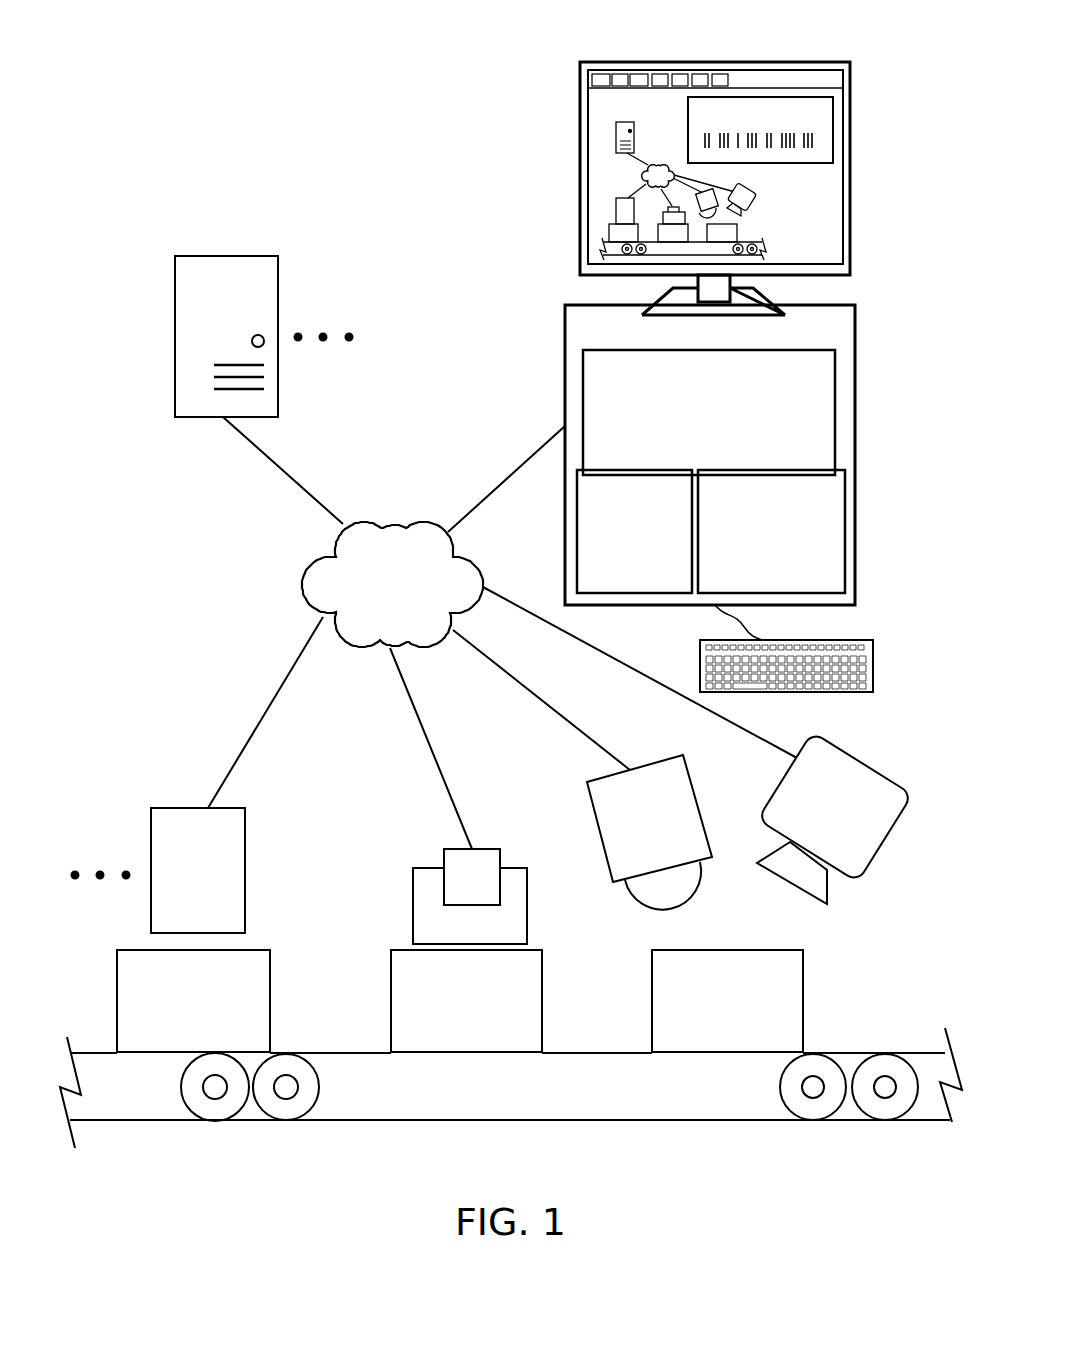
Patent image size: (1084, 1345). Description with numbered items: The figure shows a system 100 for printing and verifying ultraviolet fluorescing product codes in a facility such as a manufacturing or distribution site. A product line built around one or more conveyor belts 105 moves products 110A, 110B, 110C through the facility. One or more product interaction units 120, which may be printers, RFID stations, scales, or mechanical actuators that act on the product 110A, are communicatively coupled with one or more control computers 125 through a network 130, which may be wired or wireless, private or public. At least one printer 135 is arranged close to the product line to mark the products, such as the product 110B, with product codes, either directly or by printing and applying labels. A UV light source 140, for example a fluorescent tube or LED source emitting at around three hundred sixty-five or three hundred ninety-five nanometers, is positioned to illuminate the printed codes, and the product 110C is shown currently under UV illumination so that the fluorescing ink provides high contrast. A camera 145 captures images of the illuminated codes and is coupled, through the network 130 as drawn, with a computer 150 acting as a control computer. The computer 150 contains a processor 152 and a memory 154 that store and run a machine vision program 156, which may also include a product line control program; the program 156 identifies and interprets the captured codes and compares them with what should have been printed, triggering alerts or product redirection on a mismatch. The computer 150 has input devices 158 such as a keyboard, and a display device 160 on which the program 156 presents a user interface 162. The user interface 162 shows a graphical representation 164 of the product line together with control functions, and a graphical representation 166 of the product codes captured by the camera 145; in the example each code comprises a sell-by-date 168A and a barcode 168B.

The system 100 is at (128, 122).
The conveyor belt 105 is at (328, 1138).
The product 110A is at (193, 1001).
The product 110B is at (466, 1001).
The product 110C is at (727, 1001).
The product interaction unit 120 is at (172, 808).
The control computer 125 is at (175, 333).
The network 130 is at (302, 578).
The printer 135 is at (413, 885).
The UV light source 140 is at (595, 833).
The camera 145 is at (876, 768).
The computer 150 is at (710, 455).
The processor 152 is at (634, 531).
The memory 154 is at (771, 531).
The machine vision program 156 is at (709, 412).
The input device 158 is at (856, 640).
The display device 160 is at (727, 62).
The user interface 162 is at (812, 70).
The graphical representation of the product line 164 is at (608, 167).
The graphical representation of captured product codes 166 is at (825, 177).
The sell-by-date 168A is at (838, 118).
The barcode 168B is at (832, 140).